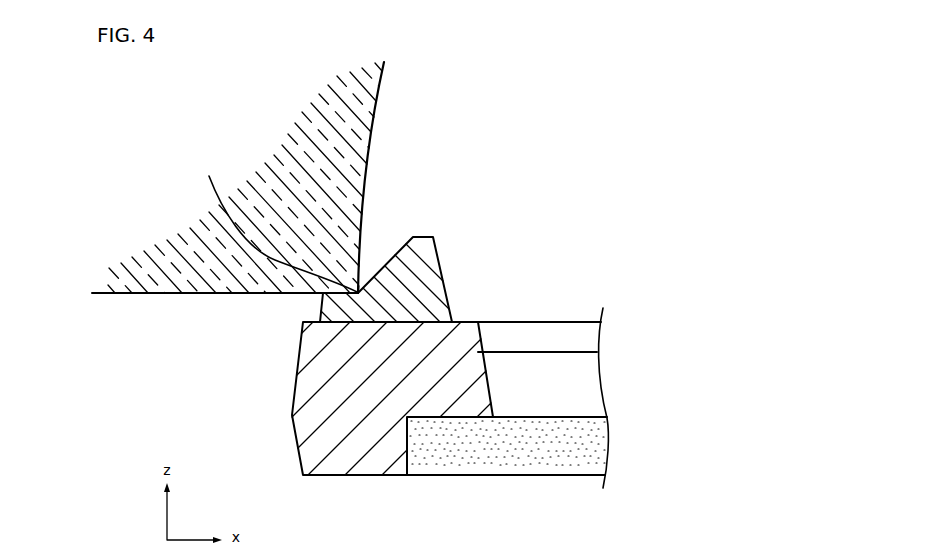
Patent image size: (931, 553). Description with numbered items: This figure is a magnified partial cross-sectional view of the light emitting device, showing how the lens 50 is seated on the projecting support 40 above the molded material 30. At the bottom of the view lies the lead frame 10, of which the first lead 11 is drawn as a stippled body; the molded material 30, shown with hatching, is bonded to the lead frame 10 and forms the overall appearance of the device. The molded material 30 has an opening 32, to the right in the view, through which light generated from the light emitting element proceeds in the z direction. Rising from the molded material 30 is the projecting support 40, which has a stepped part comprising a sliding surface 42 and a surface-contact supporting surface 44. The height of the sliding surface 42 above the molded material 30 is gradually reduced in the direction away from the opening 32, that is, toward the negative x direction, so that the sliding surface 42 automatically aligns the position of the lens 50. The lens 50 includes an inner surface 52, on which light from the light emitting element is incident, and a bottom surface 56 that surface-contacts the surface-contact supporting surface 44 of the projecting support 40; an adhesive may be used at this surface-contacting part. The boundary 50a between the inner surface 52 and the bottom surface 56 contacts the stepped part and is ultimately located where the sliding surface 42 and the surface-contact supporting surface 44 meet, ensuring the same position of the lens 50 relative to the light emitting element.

The lens 50 is at (128, 286).
The boundary 50a is at (350, 278).
The surface-contact supporting surface 44 is at (273, 221).
The inner surface 52 is at (365, 198).
The bottom surface 56 is at (193, 295).
The projecting support 40 is at (322, 310).
The sliding surface 42 is at (400, 250).
The molded material 30 is at (362, 467).
The opening 32 is at (522, 404).
The first lead 11 is at (507, 477).
The lead frame 10 is at (453, 467).